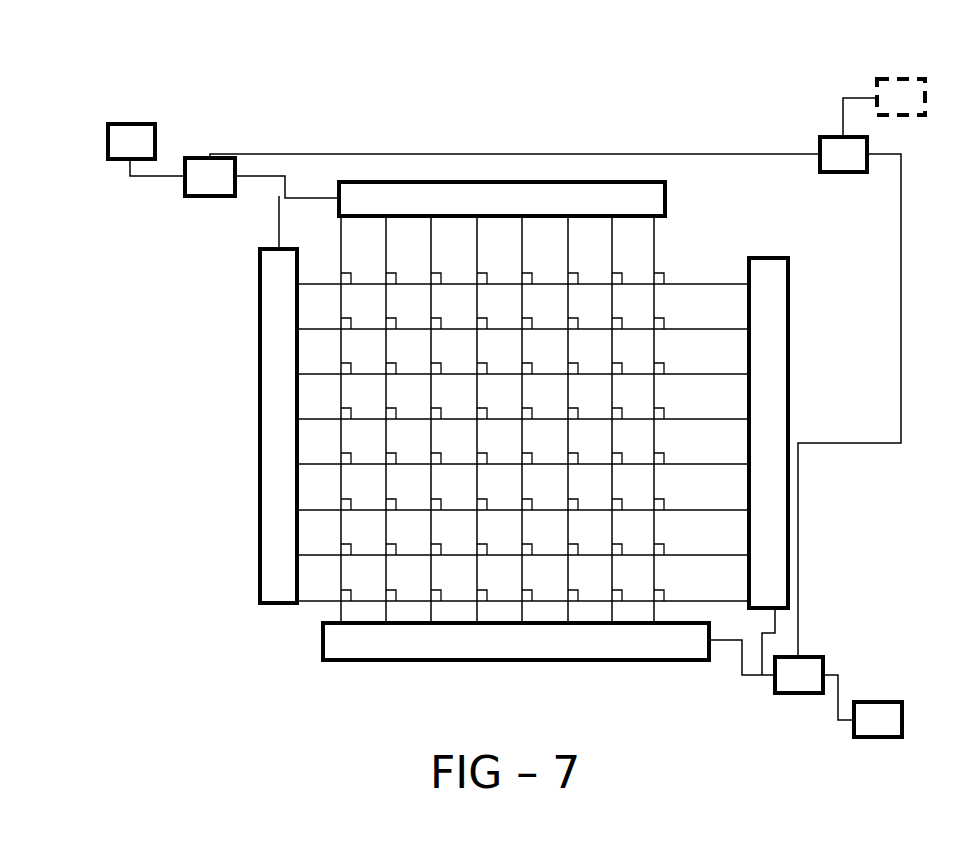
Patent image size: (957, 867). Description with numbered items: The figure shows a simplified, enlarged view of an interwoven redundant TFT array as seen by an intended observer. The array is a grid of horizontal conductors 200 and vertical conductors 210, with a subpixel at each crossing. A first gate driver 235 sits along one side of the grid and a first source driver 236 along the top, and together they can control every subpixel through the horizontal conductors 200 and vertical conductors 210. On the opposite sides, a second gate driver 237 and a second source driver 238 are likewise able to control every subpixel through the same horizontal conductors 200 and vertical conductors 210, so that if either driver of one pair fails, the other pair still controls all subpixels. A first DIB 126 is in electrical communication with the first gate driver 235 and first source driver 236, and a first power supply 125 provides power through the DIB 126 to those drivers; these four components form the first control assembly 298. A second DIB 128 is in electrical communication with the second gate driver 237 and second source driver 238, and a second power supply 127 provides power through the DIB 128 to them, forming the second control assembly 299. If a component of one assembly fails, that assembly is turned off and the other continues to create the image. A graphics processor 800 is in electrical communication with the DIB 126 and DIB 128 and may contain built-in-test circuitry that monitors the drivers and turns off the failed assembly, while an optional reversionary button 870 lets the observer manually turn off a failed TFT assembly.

The first power supply 125 is at (128, 137).
The first DIB 126 is at (205, 170).
The second power supply 127 is at (888, 713).
The second DIB 128 is at (788, 677).
The horizontal conductors 200 is at (320, 283).
The vertical conductors 210 is at (475, 573).
The first gate driver 235 is at (270, 290).
The first source driver 236 is at (413, 195).
The second gate driver 237 is at (769, 408).
The second source driver 238 is at (458, 637).
The first control assembly 298 is at (118, 250).
The second control assembly 299 is at (833, 623).
The graphics processor 800 is at (840, 148).
The reversionary button 870 is at (898, 92).